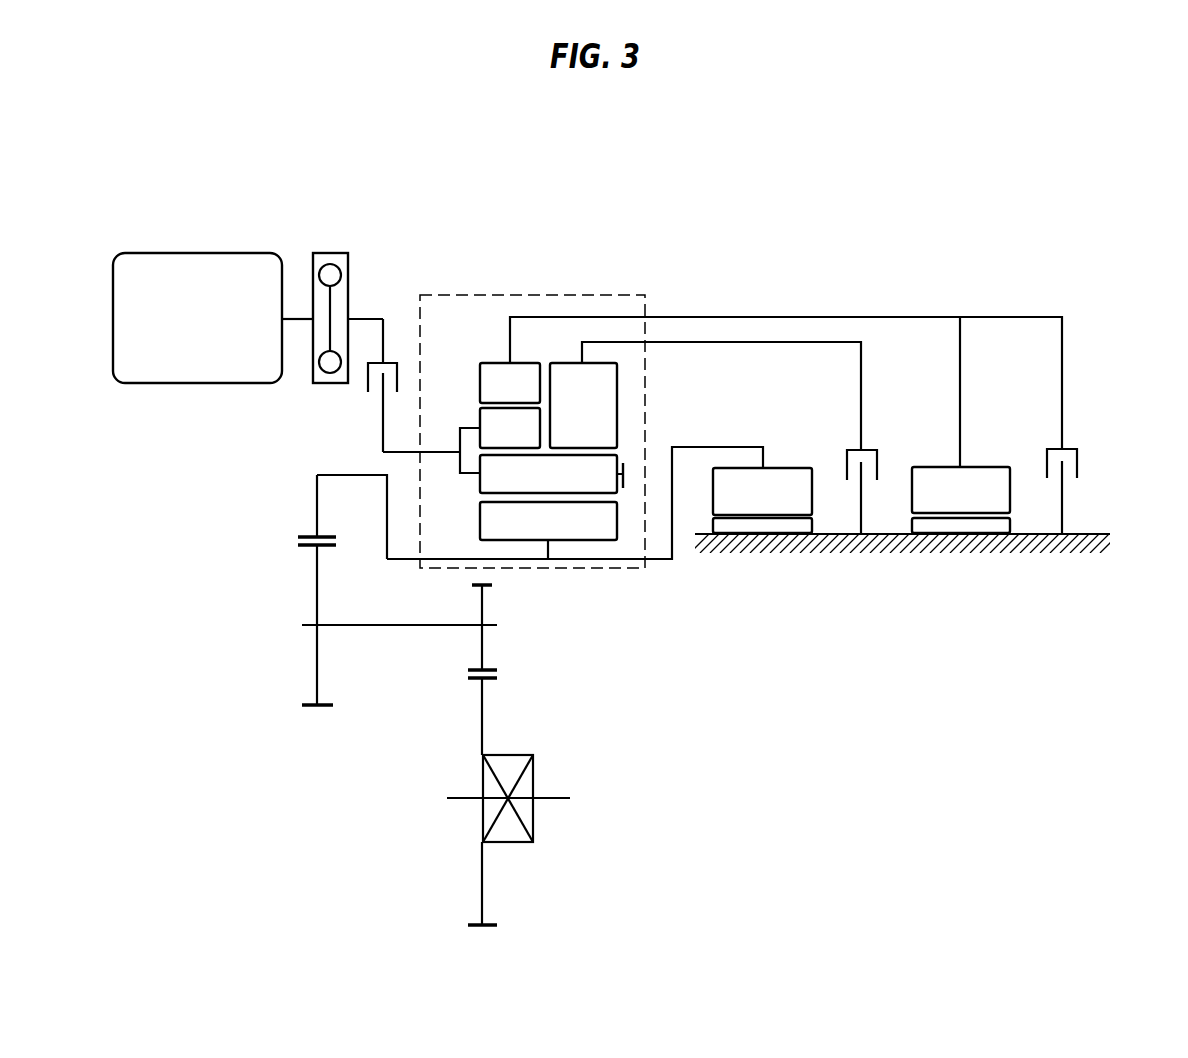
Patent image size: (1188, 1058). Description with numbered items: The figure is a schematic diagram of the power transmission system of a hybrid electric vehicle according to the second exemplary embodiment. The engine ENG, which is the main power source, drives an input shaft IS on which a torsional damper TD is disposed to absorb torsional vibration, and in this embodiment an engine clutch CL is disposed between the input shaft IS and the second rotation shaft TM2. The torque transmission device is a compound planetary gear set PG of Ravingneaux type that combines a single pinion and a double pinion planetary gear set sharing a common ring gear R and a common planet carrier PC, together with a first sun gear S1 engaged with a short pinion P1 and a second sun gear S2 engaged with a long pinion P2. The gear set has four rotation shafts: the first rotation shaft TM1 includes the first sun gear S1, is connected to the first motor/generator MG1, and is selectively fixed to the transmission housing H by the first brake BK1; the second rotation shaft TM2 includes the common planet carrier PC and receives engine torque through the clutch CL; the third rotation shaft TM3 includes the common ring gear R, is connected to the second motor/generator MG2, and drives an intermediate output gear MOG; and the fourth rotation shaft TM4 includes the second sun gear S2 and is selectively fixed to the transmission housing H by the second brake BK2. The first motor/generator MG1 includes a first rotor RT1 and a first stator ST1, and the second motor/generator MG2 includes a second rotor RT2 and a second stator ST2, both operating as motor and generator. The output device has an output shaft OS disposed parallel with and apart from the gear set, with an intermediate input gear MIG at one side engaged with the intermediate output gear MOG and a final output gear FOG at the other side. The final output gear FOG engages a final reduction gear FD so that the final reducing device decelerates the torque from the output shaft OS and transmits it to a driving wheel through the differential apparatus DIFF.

The engine ENG is at (197, 318).
The torsional damper TD is at (352, 245).
The input shaft IS is at (365, 319).
The engine clutch CL is at (402, 352).
The second rotation shaft TM2 is at (382, 420).
The compound planetary gear set PG is at (560, 292).
The common planet carrier PC is at (442, 453).
The first sun gear S1 is at (510, 383).
The second sun gear S2 is at (583, 405).
The short pinion P1 is at (510, 428).
The long pinion P2 is at (551, 474).
The common ring gear R is at (548, 521).
The first rotation shaft TM1 is at (732, 317).
The third rotation shaft TM3 is at (660, 562).
The fourth rotation shaft TM4 is at (696, 343).
The first brake BK1 is at (1081, 436).
The second brake BK2 is at (843, 445).
The first motor/generator MG1 is at (964, 565).
The second motor/generator MG2 is at (769, 566).
The first rotor RT1 is at (938, 503).
The first stator ST1 is at (990, 527).
The second rotor RT2 is at (748, 505).
The second stator ST2 is at (800, 527).
The transmission housing H is at (887, 545).
The intermediate output gear MOG is at (317, 503).
The intermediate input gear MIG is at (317, 598).
The output shaft OS is at (377, 627).
The final output gear FOG is at (484, 642).
The final reduction gear FD is at (484, 703).
The differential apparatus DIFF is at (534, 837).